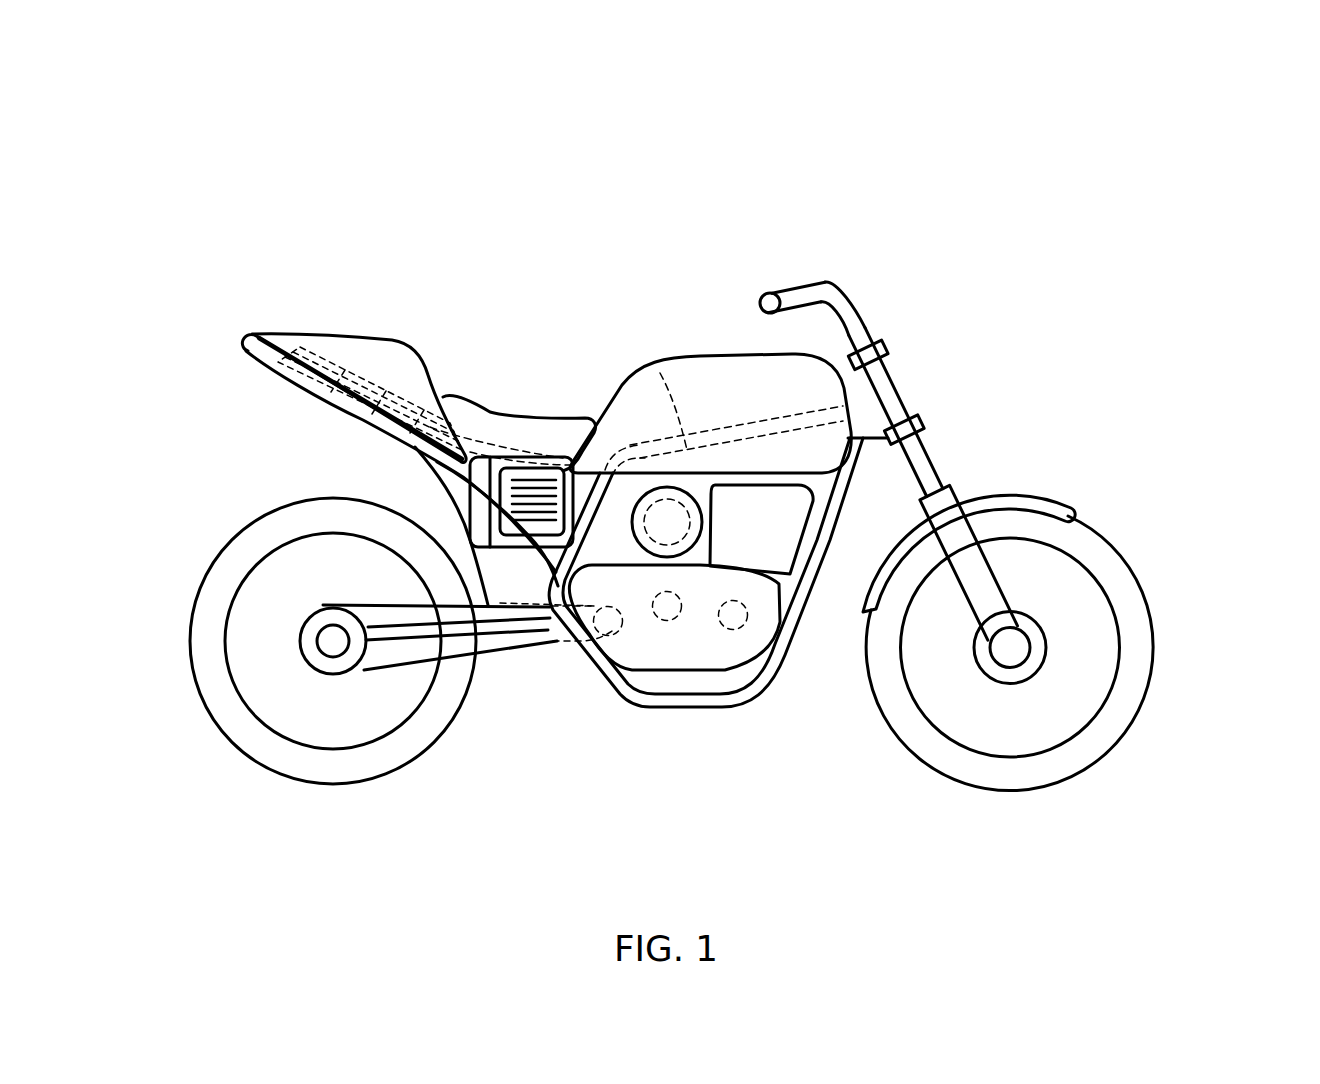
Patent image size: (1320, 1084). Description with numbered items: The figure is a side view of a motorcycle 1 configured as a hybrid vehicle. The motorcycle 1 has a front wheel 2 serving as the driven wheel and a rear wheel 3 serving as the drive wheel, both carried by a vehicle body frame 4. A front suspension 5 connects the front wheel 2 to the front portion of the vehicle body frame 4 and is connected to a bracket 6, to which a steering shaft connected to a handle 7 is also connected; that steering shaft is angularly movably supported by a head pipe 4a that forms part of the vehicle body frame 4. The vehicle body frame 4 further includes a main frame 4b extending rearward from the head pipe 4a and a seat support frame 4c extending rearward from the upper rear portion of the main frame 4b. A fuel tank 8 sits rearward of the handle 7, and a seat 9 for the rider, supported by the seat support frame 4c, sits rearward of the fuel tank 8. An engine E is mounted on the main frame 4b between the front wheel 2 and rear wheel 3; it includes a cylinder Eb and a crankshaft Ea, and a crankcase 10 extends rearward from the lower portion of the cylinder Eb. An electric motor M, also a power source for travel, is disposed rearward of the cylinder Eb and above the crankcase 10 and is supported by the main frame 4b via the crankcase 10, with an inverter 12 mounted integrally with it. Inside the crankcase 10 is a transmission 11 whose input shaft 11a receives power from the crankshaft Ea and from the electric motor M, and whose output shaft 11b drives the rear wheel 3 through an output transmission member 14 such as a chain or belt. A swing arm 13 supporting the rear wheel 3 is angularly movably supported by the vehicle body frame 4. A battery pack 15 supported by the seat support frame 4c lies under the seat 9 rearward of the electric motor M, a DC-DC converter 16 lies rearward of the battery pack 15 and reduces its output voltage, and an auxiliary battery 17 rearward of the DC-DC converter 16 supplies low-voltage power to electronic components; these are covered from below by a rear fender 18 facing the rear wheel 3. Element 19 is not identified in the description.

The motorcycle 1 is at (993, 234).
The front wheel 2 is at (1151, 626).
The rear wheel 3 is at (189, 641).
The vehicle body frame 4 is at (844, 496).
The head pipe 4a is at (877, 376).
The main frame 4b is at (714, 428).
The seat support frame 4c is at (497, 445).
The front suspension 5 is at (973, 588).
The bracket 6 is at (922, 428).
The handle 7 is at (770, 294).
The fuel tank 8 is at (729, 355).
The seat 9 is at (532, 415).
The crankcase 10 is at (737, 650).
The transmission 11 is at (649, 636).
The input shaft 11a is at (667, 621).
The output shaft 11b is at (616, 634).
The inverter 12 is at (660, 373).
The swing arm 13 is at (500, 628).
The output transmission member 14 is at (458, 660).
The battery pack 15 is at (497, 535).
The DC-DC converter 16 is at (403, 378).
The auxiliary battery 17 is at (332, 352).
The rear fender 18 is at (425, 472).
The rear frame pipe 19 is at (487, 487).
The electric motor M is at (669, 505).
The engine E is at (731, 642).
The crankshaft Ea is at (745, 622).
The cylinder Eb is at (788, 513).